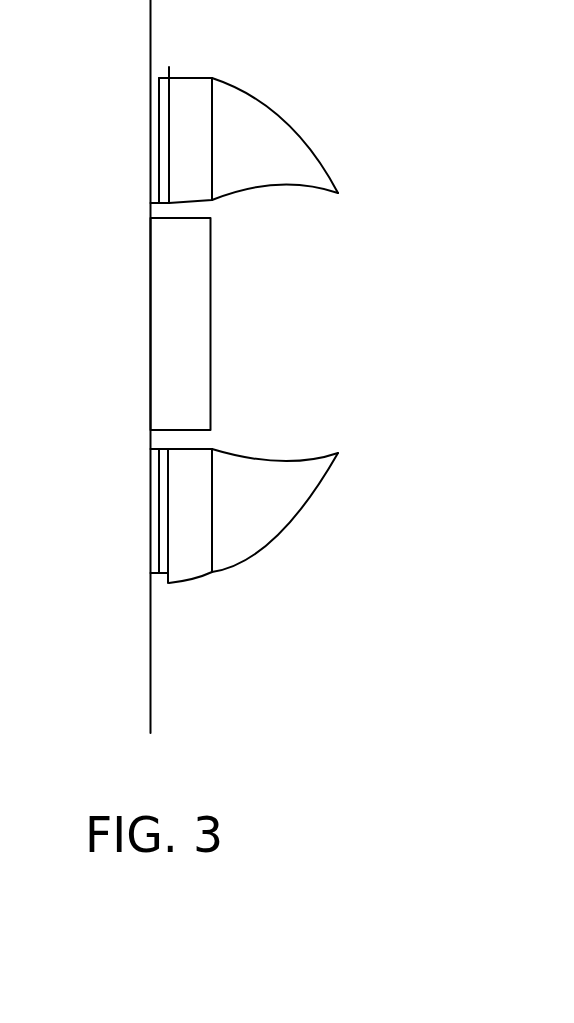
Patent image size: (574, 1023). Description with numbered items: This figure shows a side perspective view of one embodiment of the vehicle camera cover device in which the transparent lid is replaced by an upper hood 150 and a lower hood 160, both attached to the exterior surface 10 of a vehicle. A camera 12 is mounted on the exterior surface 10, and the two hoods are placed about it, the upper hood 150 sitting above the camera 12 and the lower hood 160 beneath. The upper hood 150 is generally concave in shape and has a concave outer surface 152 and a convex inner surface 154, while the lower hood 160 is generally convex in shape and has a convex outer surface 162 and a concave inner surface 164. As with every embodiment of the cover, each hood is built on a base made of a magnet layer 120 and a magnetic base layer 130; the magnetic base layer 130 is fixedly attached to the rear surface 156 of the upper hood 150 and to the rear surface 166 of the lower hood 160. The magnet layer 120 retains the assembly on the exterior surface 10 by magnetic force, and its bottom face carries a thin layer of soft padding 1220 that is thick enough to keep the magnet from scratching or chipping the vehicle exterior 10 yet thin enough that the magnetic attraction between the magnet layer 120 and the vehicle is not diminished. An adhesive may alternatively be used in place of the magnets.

The exterior surface 10 is at (148, 298).
The camera 12 is at (167, 352).
The magnet layer 120 is at (160, 82).
The soft padding 1220 is at (156, 127).
The magnetic base layer 130 is at (192, 90).
The upper hood 150 is at (314, 126).
The concave outer surface 152 is at (314, 135).
The convex inner surface 154 is at (275, 214).
The rear surface 156 is at (213, 123).
The lower hood 160 is at (333, 456).
The convex outer surface 162 is at (340, 457).
The concave inner surface 164 is at (300, 458).
The rear surface 166 is at (213, 483).